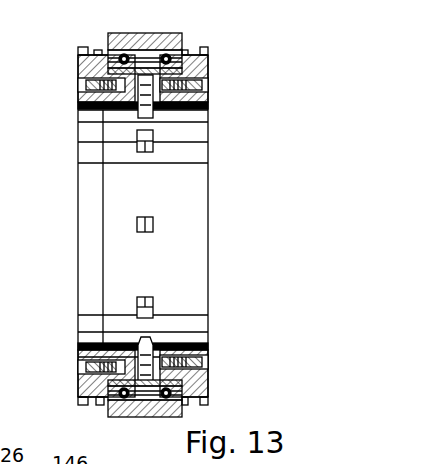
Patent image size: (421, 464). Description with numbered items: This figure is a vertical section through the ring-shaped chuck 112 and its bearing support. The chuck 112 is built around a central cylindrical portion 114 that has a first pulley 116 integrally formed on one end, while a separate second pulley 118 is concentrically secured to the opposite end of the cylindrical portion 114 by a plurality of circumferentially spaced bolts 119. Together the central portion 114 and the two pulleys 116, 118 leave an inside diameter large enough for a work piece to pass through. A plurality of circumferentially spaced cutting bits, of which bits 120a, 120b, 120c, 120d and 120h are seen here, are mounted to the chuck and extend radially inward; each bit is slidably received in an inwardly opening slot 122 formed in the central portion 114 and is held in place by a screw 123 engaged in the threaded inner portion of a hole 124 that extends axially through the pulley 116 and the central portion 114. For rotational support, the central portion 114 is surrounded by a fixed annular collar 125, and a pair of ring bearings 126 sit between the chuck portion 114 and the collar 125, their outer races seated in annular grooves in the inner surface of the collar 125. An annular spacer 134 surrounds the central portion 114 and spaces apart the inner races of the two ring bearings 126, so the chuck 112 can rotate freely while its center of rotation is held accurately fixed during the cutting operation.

The ring-shaped chuck 112 is at (213, 50).
The central cylindrical portion 114 is at (118, 347).
The first pulley 116 is at (195, 380).
The second pulley 118 is at (97, 68).
The bolts 119 is at (80, 367).
The cutting bit 120a is at (153, 148).
The cutting bit 120b is at (153, 224).
The cutting bit 120c is at (153, 305).
The cutting bit 120d is at (155, 343).
The cutting bit 120h is at (208, 130).
The inwardly opening slot 122 is at (205, 73).
The screws 123 is at (206, 87).
The holes 124 is at (200, 362).
The fixed annular collar 125 is at (110, 33).
The ring bearings 126 is at (166, 58).
The annular spacer 134 is at (142, 412).